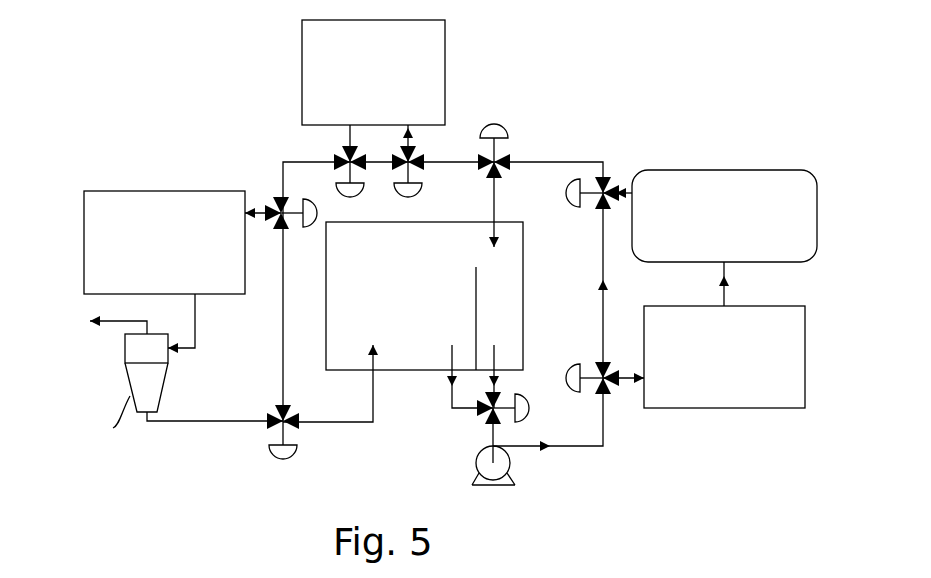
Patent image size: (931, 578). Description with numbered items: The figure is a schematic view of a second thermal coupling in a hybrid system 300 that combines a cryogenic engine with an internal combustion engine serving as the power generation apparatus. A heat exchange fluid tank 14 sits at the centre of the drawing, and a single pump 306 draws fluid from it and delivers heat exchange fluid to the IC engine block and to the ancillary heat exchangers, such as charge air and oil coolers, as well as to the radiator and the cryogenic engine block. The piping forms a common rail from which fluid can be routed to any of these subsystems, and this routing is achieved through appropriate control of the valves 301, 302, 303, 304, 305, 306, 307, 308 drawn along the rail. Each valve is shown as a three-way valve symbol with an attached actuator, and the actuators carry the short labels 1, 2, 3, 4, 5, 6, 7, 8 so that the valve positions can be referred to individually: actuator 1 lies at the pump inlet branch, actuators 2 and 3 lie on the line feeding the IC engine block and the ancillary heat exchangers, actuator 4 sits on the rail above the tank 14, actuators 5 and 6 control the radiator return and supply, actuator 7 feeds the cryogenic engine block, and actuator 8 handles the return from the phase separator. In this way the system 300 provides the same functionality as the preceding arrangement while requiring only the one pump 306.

The system 300 is at (643, 70).
The heat exchange fluid tank 14 is at (425, 370).
The valve 301 is at (535, 415).
The valve 302 is at (595, 356).
The valve 303 is at (589, 217).
The valve 304 is at (485, 124).
The valve 305 is at (438, 178).
The pump 306 is at (374, 338).
The valve 307 is at (285, 238).
The valve 308 is at (276, 455).
The valve actuator 1 is at (522, 408).
The valve actuator 2 is at (573, 378).
The valve actuator 3 is at (573, 193).
The valve actuator 4 is at (494, 131).
The valve actuator 5 is at (408, 192).
The valve actuator 6 is at (350, 192).
The valve actuator 7 is at (310, 213).
The valve actuator 8 is at (283, 454).